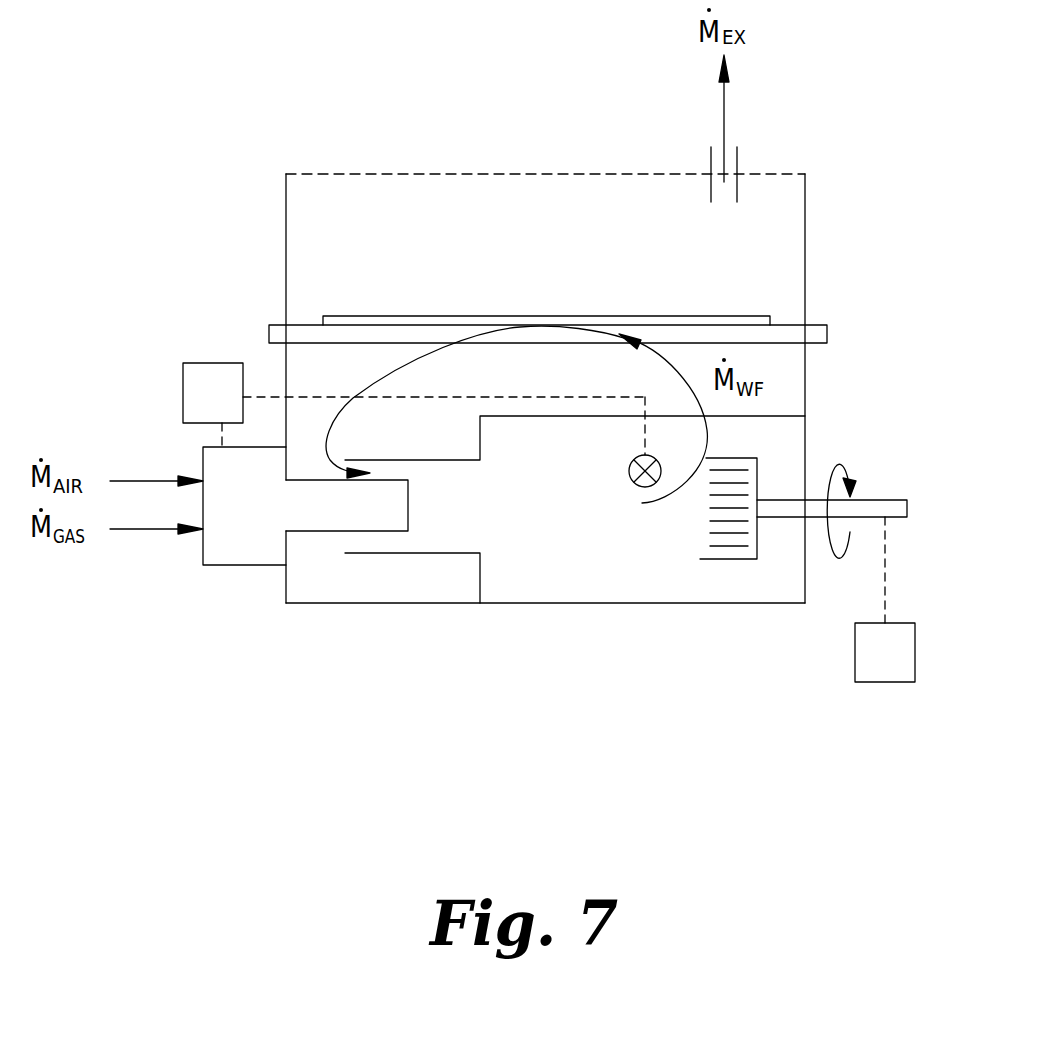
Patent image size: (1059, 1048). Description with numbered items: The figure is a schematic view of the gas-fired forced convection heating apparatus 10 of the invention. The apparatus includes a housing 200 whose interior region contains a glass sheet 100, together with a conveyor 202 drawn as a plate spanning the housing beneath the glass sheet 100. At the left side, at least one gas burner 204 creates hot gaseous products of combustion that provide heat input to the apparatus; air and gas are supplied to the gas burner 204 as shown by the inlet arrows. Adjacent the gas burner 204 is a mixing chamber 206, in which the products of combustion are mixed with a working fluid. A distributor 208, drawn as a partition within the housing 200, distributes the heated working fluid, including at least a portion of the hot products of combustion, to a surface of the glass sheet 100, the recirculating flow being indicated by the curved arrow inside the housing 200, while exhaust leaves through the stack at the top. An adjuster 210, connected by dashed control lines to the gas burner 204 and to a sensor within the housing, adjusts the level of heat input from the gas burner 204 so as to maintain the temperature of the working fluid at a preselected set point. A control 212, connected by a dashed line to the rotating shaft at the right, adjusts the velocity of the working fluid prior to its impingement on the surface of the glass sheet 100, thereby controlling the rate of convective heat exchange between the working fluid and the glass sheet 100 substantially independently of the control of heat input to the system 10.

The gas-fired forced convection heating apparatus 10 is at (357, 90).
The glass sheet 100 is at (681, 318).
The housing 200 is at (805, 196).
The conveyor 202 is at (814, 325).
The gas burner 204 is at (318, 506).
The mixing chamber 206 is at (430, 553).
The distributor 208 is at (782, 416).
The adjuster 210 is at (197, 363).
The control 212 is at (870, 682).